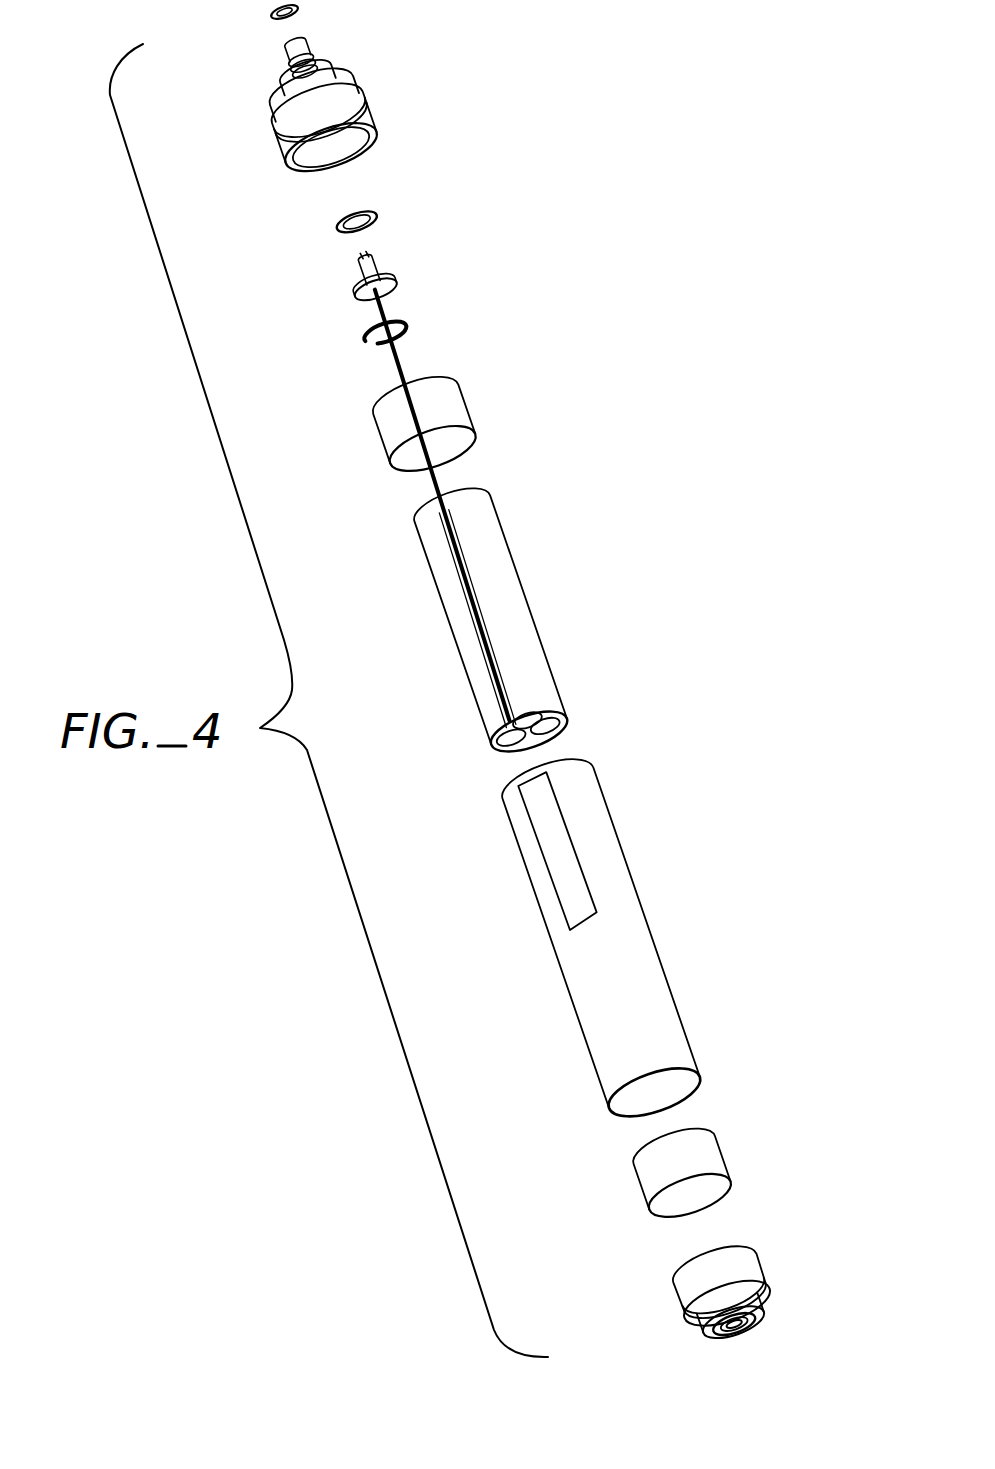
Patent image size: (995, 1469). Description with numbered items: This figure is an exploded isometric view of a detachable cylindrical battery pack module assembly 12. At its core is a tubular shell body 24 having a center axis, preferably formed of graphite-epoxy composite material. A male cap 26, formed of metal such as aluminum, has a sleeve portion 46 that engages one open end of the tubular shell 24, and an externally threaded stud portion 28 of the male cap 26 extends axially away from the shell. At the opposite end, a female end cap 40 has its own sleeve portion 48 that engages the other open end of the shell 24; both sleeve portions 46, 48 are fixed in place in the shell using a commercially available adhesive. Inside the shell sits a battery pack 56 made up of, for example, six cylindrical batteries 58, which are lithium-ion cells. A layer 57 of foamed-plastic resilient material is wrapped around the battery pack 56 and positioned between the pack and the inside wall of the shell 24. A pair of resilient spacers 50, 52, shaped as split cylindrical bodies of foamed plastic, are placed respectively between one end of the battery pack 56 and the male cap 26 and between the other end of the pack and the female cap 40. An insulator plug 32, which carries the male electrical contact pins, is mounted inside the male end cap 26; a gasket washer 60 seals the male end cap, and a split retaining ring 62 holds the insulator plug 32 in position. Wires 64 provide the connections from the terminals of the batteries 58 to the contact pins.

The battery pack module assembly 12 is at (526, 382).
The tubular shell body 24 is at (620, 888).
The male cap 26 is at (388, 86).
The externally threaded stud portion 28 is at (313, 60).
The insulator plug 32 is at (378, 268).
The female end cap 40 is at (630, 1260).
The sleeve portion 46 is at (355, 115).
The sleeve portion 48 is at (757, 1258).
The resilient spacer 50 is at (457, 413).
The resilient spacer 52 is at (715, 1150).
The battery pack 56 is at (483, 465).
The layer of foamed-plastic resilient material 57 is at (517, 562).
The cylindrical batteries 58 is at (530, 713).
The gasket washer 60 is at (335, 222).
The split retaining ring 62 is at (418, 323).
The wires 64 is at (393, 368).